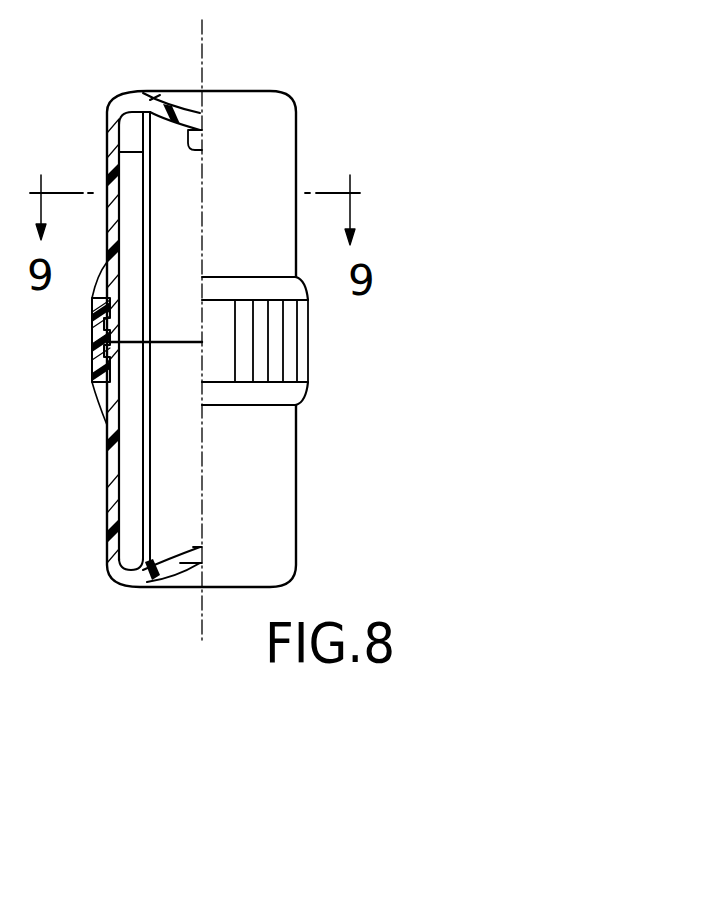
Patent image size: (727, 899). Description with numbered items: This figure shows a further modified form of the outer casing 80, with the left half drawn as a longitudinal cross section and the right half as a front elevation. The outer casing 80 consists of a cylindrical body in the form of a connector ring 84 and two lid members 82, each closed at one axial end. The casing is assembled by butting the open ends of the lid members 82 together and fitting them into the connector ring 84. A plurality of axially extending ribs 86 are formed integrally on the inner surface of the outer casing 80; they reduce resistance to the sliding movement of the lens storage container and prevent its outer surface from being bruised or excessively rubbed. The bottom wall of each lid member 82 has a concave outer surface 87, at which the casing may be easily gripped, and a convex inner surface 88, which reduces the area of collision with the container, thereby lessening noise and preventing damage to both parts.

The outer casing 80 is at (350, 78).
The lid member 82 is at (280, 156).
The connector ring 84 is at (290, 342).
The axially extending ribs 86 is at (143, 152).
The concave outer surface 87 is at (173, 92).
The convex inner surface 88 is at (202, 153).